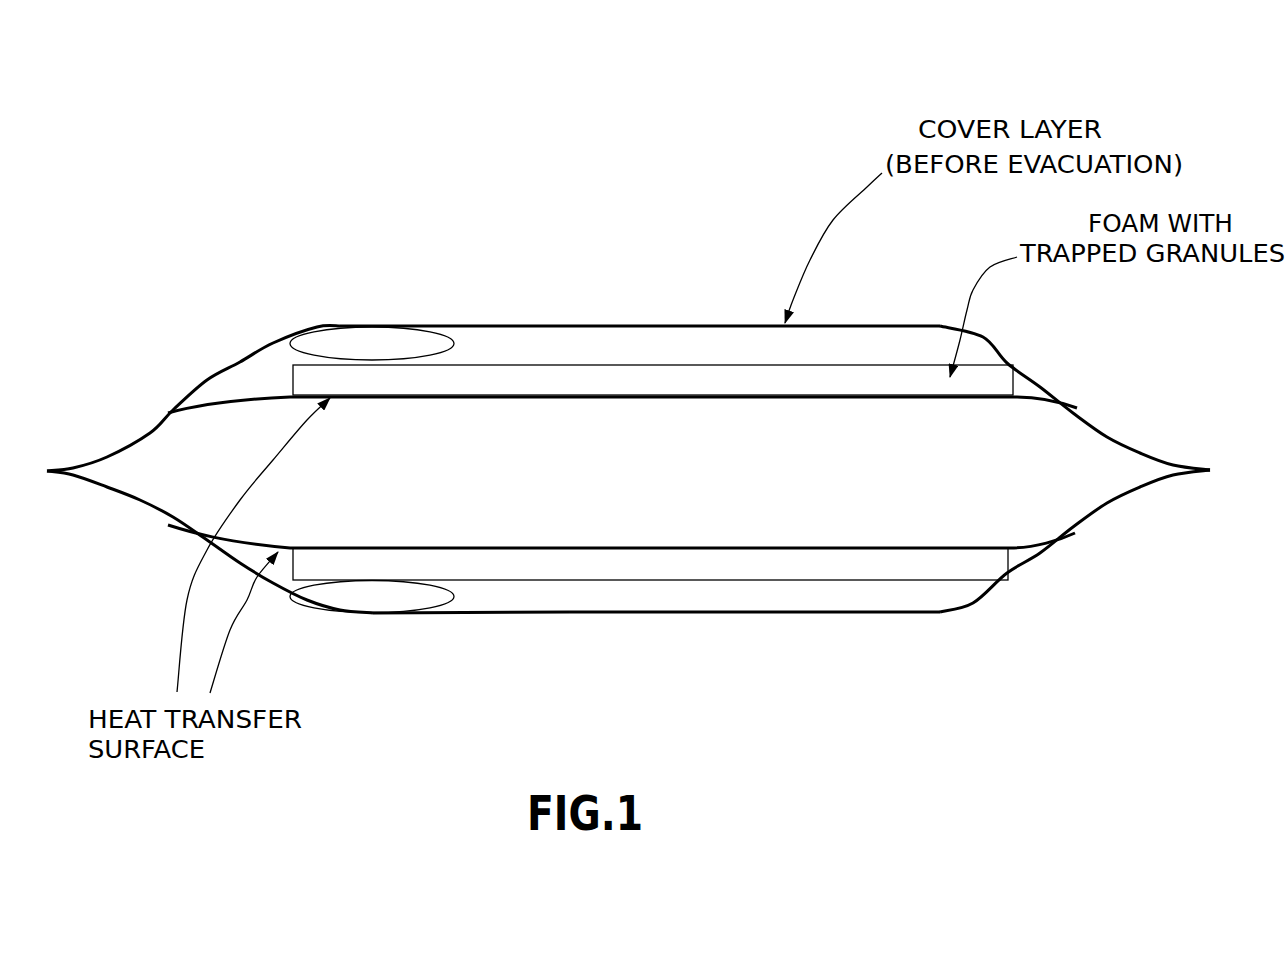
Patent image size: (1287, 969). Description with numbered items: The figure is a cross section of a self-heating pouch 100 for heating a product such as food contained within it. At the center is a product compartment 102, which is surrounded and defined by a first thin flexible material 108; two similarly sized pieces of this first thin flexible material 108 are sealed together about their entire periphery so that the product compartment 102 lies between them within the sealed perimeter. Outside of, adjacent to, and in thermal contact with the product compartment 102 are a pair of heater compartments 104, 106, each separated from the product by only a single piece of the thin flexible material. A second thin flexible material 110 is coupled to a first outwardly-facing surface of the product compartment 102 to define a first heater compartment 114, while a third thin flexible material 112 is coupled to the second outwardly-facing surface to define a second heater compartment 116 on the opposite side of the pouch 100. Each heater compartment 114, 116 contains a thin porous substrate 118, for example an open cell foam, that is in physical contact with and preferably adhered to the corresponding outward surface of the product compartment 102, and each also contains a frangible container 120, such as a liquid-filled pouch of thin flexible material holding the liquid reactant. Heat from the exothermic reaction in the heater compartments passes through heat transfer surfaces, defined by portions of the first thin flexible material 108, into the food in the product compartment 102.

The self-heating pouch 100 is at (717, 255).
The product compartment 102 is at (618, 511).
The heater compartment 104 is at (530, 347).
The heater compartment 106 is at (528, 596).
The first thin flexible material 108 is at (150, 433).
The second thin flexible material 110 is at (617, 325).
The third thin flexible material 112 is at (623, 613).
The first heater compartment 114 is at (1007, 342).
The second heater compartment 116 is at (1008, 620).
The thin porous substrate 118 is at (843, 363).
The frangible container 120 is at (348, 337).